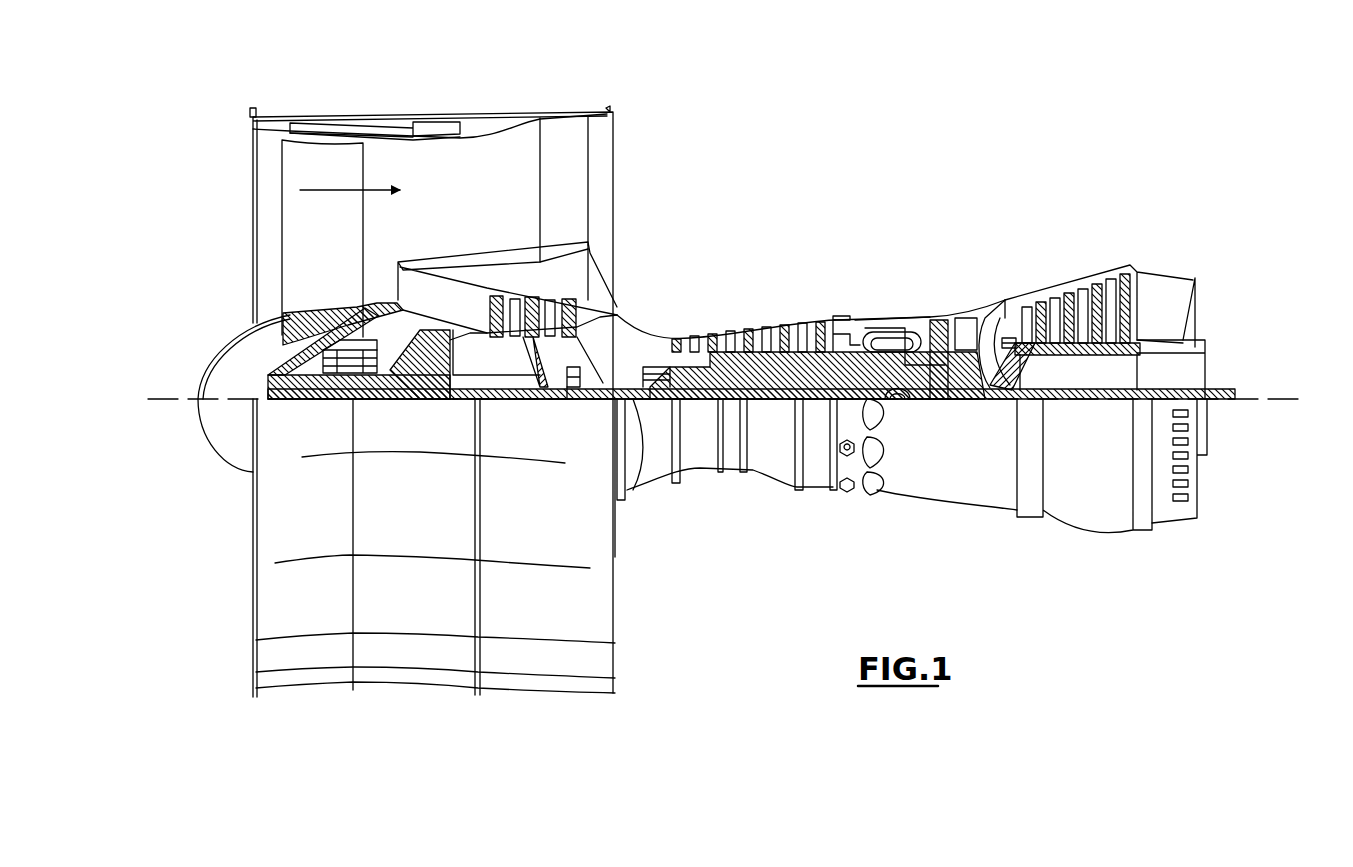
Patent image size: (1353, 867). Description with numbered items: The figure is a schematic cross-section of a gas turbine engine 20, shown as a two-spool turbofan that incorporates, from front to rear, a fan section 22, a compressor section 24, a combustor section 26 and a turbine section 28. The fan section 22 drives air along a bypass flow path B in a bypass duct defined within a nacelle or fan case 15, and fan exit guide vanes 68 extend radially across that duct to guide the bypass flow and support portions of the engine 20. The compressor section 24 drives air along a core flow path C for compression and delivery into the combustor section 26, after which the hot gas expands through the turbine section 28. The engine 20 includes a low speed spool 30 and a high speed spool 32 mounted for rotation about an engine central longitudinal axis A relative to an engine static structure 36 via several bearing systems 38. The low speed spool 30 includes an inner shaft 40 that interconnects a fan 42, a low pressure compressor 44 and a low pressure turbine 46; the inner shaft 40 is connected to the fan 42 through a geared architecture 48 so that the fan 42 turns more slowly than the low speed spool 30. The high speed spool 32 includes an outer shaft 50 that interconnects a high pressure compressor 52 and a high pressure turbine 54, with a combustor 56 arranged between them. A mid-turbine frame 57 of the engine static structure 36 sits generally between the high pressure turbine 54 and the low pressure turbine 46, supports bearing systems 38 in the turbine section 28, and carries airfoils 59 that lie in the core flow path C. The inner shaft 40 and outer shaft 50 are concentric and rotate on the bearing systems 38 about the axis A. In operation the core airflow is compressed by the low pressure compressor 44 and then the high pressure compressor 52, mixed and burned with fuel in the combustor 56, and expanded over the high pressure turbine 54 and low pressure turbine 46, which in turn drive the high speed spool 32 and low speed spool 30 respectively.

The nacelle or fan case 15 is at (436, 120).
The gas turbine engine 20 is at (895, 165).
The fan section 22 is at (365, 105).
The compressor section 24 is at (665, 302).
The combustor section 26 is at (888, 290).
The turbine section 28 is at (1033, 258).
The low speed spool 30 is at (773, 402).
The high speed spool 32 is at (815, 352).
The engine static structure 36 is at (812, 493).
The bearing systems 38 is at (1000, 385).
The inner shaft 40 is at (643, 490).
The fan 42 is at (340, 242).
The low pressure compressor 44 is at (545, 302).
The low pressure turbine 46 is at (1080, 295).
The geared architecture 48 is at (440, 390).
The outer shaft 50 is at (900, 390).
The high pressure compressor 52 is at (745, 365).
The high pressure turbine 54 is at (948, 325).
The combustor 56 is at (893, 340).
The mid-turbine frame 57 is at (1000, 310).
The airfoils 59 is at (1020, 362).
The fan exit guide vanes 68 is at (590, 175).
The engine central longitudinal axis A is at (1290, 399).
The bypass flow path B is at (338, 190).
The core flow path C is at (440, 298).